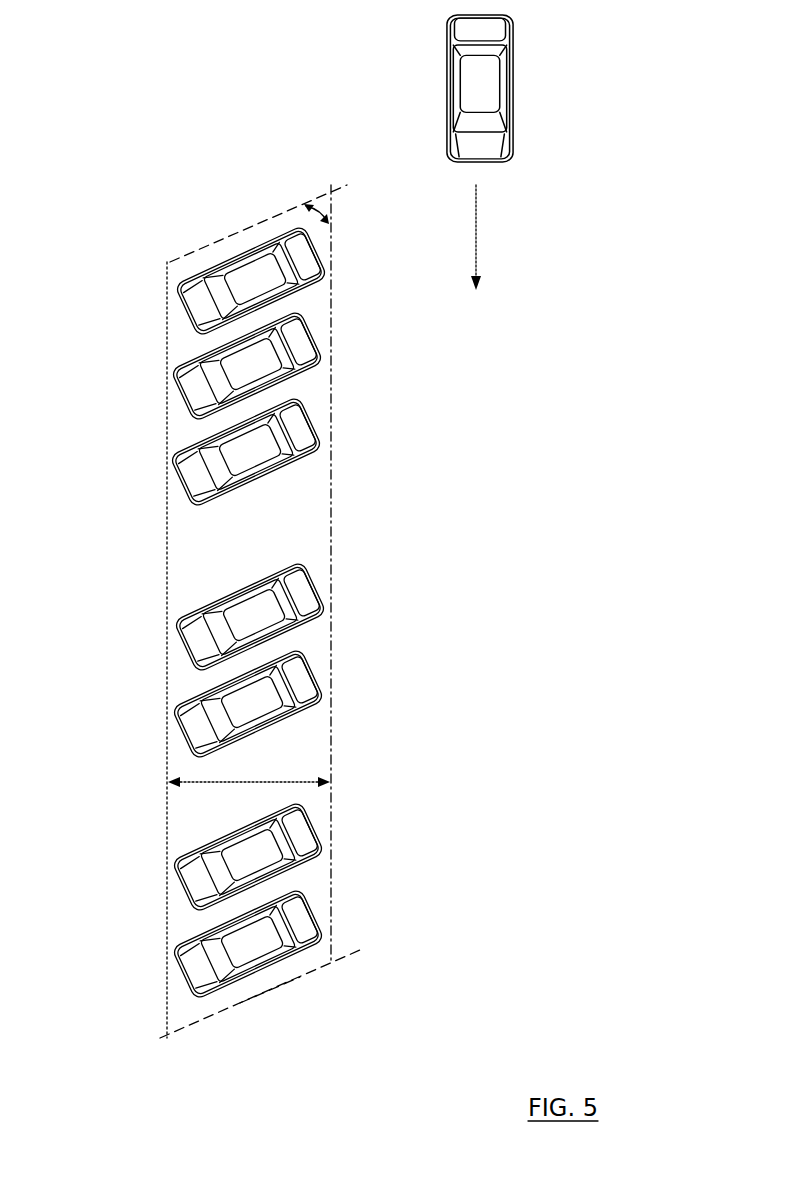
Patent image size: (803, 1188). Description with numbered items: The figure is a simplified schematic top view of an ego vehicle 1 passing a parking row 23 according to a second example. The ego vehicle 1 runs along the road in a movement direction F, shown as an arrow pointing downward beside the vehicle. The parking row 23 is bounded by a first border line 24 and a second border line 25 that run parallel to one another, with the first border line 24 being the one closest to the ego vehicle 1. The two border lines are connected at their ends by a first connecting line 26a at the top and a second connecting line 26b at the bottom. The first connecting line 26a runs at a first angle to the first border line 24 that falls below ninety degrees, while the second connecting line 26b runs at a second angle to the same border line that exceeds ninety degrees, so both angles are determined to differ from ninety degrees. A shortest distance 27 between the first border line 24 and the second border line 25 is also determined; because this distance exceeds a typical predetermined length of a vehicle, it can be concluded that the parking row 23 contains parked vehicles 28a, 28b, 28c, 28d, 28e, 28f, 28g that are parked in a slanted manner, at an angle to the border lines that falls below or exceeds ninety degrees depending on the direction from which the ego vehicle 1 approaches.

The ego vehicle 1 is at (480, 87).
The movement direction F is at (477, 268).
The parking row 23 is at (283, 994).
The first border line 24 is at (333, 660).
The second border line 25 is at (168, 660).
The first connecting line 26a is at (228, 240).
The second connecting line 26b is at (320, 963).
The shortest distance 27 is at (233, 783).
The parked vehicle 28a is at (231, 291).
The parked vehicle 28b is at (227, 376).
The parked vehicle 28c is at (226, 462).
The parked vehicle 28d is at (230, 627).
The parked vehicle 28e is at (228, 714).
The parked vehicle 28f is at (228, 867).
The parked vehicle 28g is at (228, 954).